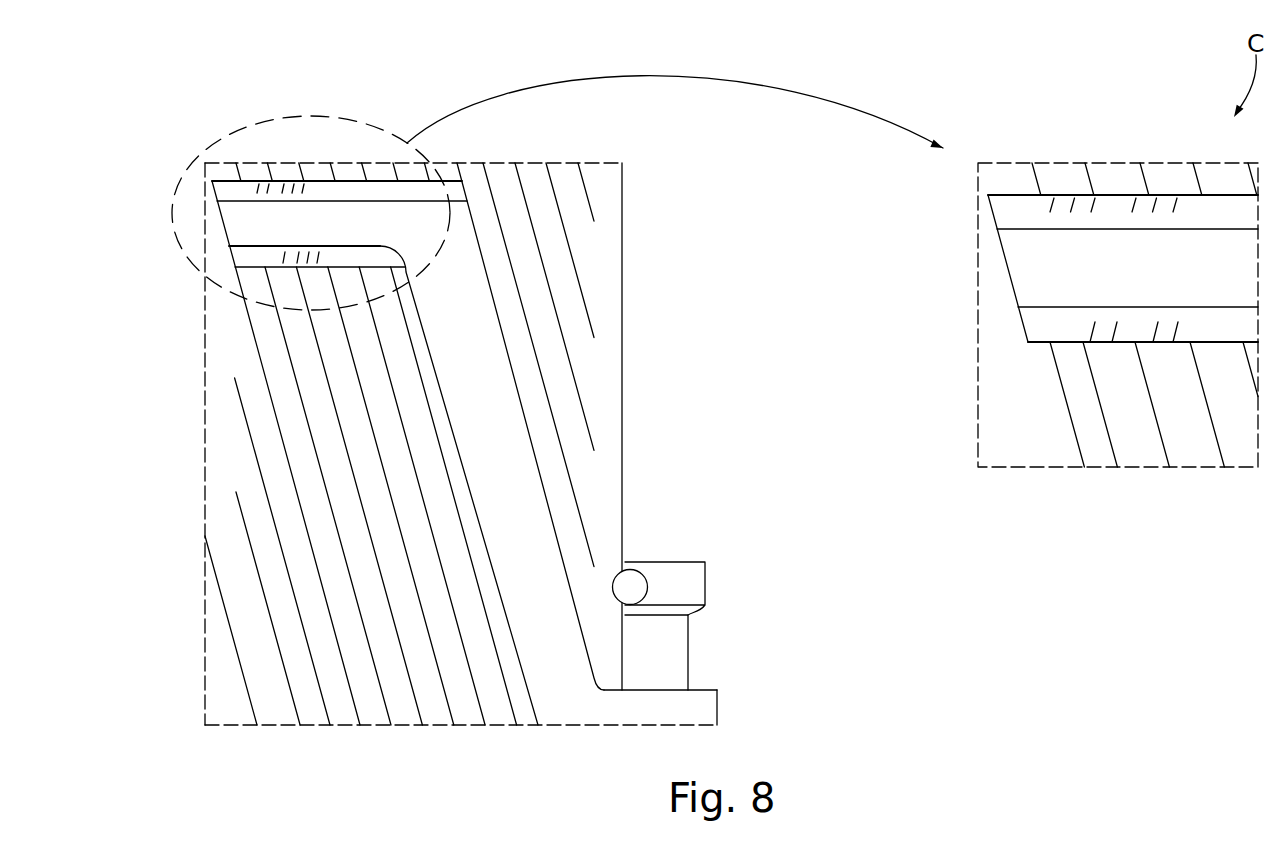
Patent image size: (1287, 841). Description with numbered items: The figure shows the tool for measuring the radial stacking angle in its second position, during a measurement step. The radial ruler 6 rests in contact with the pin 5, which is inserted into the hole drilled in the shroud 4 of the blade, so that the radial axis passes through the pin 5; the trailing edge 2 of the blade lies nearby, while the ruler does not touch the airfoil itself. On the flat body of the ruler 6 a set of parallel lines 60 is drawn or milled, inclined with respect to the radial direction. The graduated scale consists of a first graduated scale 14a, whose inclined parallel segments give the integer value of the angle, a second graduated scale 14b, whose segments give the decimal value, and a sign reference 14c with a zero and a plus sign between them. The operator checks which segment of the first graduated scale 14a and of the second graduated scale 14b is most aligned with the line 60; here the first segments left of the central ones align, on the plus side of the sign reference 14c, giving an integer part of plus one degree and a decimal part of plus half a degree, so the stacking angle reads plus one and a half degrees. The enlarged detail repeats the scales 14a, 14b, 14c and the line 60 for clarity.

The trailing edge 2 is at (698, 640).
The shroud 4 is at (690, 592).
The pin 5 is at (635, 580).
The radial ruler 6 is at (648, 240).
The first graduated scale 14a is at (270, 267).
The second graduated scale 14b is at (246, 186).
The sign reference 14c is at (268, 232).
The parallel lines 60 is at (1088, 173).